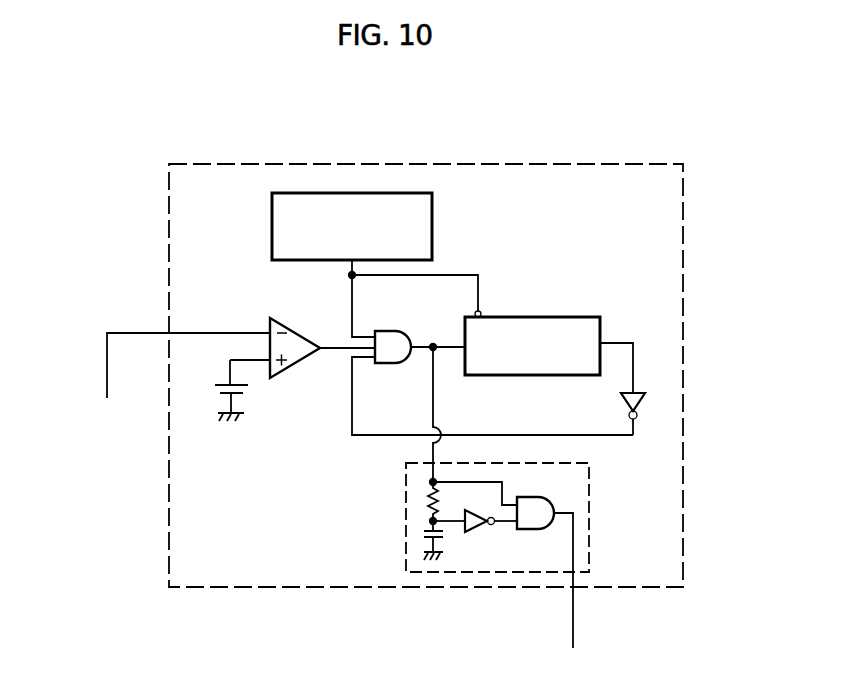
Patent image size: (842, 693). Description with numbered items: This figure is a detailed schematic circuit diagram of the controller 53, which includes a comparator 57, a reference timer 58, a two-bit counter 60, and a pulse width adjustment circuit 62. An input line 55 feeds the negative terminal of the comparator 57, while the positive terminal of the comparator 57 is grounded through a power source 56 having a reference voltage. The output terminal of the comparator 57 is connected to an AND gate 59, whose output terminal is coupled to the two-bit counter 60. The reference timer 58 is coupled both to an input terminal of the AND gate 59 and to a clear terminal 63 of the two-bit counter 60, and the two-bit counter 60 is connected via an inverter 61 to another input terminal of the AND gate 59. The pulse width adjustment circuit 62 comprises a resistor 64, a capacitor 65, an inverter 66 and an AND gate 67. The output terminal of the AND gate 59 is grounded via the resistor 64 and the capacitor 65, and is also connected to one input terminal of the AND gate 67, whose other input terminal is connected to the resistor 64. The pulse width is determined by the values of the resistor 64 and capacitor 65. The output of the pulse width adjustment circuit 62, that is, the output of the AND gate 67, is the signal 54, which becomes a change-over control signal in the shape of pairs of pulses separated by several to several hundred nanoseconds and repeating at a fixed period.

The controller 53 is at (684, 218).
The signal 54 is at (575, 627).
The input line 55 is at (107, 372).
The power source 56 is at (249, 390).
The comparator 57 is at (300, 331).
The reference timer 58 is at (432, 220).
The AND gate 59 is at (392, 339).
The 2-bit counter 60 is at (560, 317).
The inverter 61 is at (628, 405).
The pulse width adjustment circuit 62 is at (406, 530).
The clear terminal 63 is at (481, 309).
The resistor 64 is at (430, 500).
The capacitor 65 is at (425, 535).
The inverter 66 is at (495, 526).
The AND gate 67 is at (535, 503).